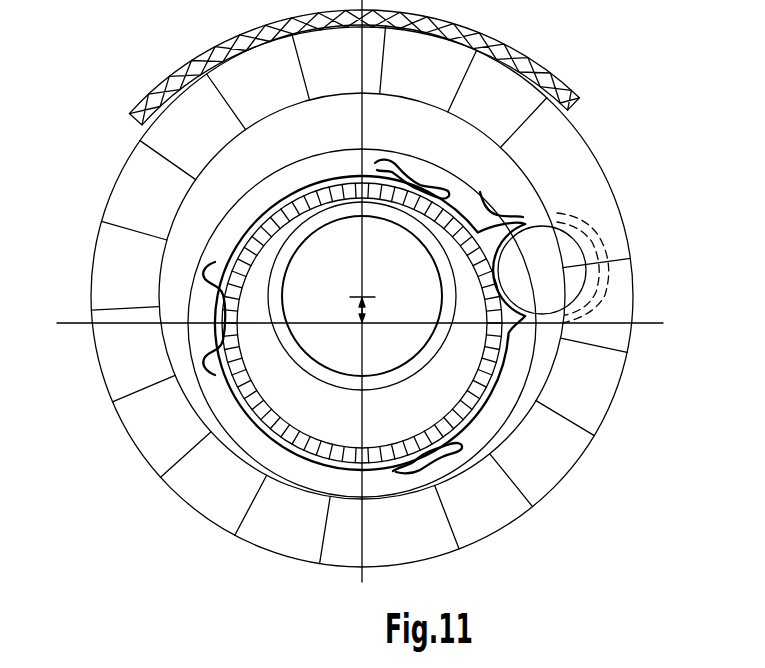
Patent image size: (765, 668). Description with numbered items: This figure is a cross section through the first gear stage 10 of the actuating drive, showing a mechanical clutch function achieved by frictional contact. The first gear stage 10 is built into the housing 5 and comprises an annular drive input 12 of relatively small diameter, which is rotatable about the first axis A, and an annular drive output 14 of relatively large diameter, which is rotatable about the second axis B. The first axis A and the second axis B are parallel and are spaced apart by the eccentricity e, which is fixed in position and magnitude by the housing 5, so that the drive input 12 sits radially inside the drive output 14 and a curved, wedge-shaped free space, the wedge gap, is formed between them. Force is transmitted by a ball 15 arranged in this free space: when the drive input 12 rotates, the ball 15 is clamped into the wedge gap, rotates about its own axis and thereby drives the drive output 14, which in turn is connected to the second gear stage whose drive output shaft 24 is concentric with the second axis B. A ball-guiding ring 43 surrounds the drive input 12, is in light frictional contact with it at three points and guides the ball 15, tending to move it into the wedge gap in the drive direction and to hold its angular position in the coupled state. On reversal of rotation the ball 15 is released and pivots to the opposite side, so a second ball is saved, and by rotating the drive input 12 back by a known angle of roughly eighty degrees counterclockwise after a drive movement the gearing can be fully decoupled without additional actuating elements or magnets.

The housing 5 is at (475, 33).
The first gear stage 10 is at (560, 505).
The drive input 12 is at (418, 372).
The drive output 14 is at (545, 140).
The ball 15 is at (540, 268).
The drive output shaft 24 is at (480, 448).
The ball-guiding ring 43 is at (482, 212).
The eccentricity e is at (365, 303).
The first axis A is at (362, 323).
The second axis B is at (358, 298).